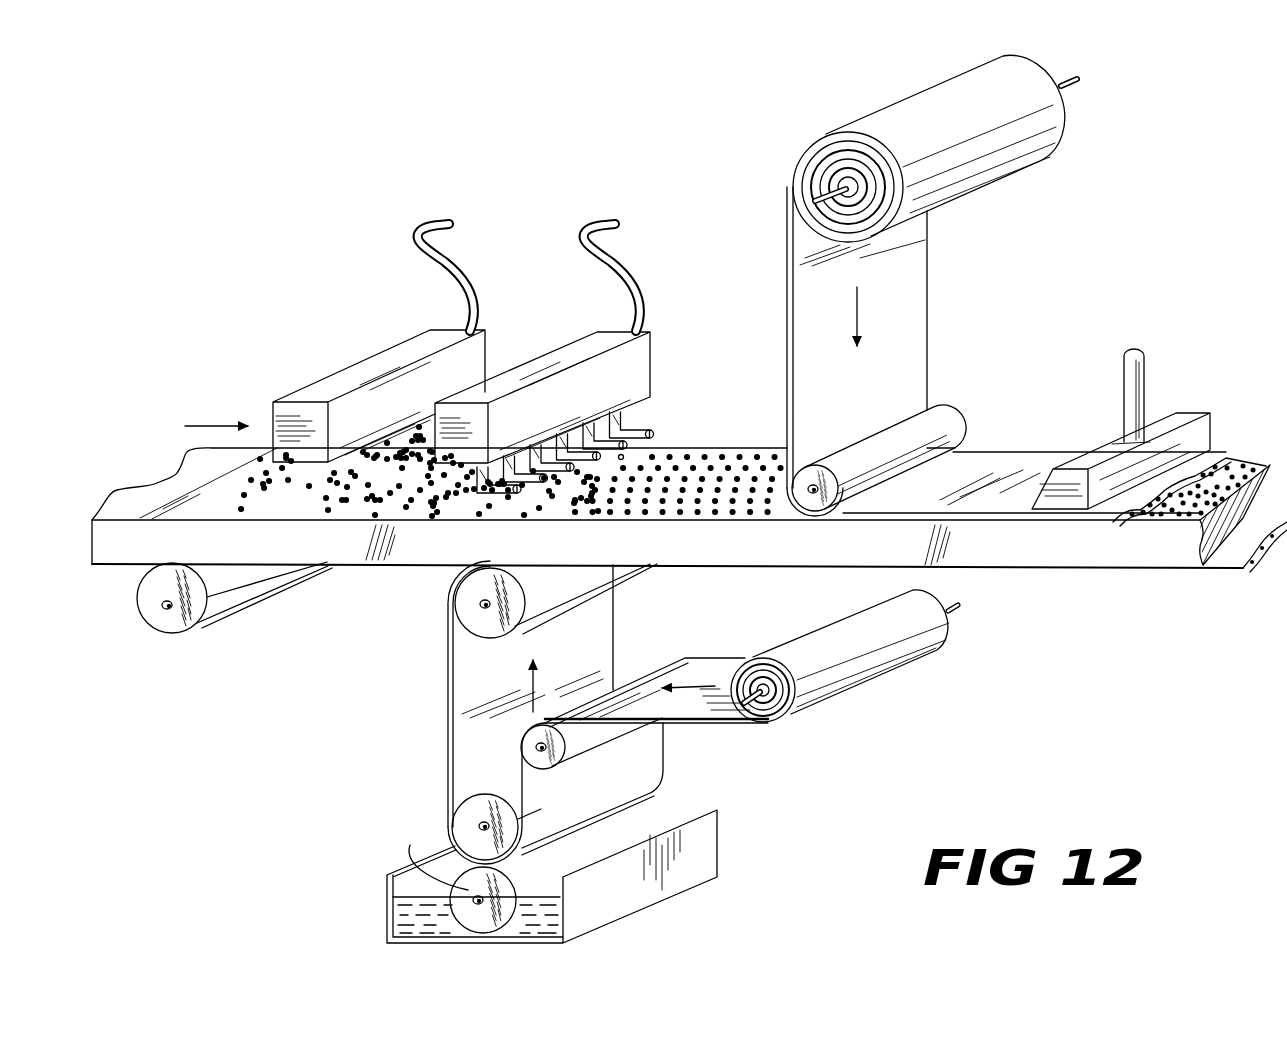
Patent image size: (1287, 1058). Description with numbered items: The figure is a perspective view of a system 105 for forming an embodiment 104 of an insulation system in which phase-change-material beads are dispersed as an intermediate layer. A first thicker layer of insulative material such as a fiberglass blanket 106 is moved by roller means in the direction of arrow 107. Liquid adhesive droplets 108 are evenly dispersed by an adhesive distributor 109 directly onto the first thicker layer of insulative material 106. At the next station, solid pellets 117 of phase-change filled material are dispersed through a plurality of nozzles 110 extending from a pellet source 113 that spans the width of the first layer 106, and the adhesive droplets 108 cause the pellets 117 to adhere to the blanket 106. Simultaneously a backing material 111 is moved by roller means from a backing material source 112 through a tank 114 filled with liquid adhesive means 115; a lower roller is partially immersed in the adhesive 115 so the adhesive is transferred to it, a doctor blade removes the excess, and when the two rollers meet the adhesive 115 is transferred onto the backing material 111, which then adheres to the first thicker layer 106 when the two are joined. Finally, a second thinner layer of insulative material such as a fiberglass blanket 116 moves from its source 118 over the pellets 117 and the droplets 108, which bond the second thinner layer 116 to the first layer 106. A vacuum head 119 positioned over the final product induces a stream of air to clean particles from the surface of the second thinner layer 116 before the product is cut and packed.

The insulation system embodiment 104 is at (992, 442).
The system 105 is at (487, 358).
The first thicker layer of insulative material 106 is at (329, 548).
The arrow 107 is at (205, 424).
The liquid adhesive droplets 108 is at (312, 507).
The adhesive distributor 109 is at (368, 442).
The nozzles 110 is at (648, 420).
The backing material 111 is at (487, 759).
The backing material source 112 is at (902, 682).
The pellet source 113 is at (568, 358).
The tank 114 is at (595, 908).
The liquid adhesive means 115 is at (414, 925).
The second thinner layer of insulative material 116 is at (855, 443).
The solid pellets of phase-change filled material 117 is at (621, 457).
The source of second thinner layer 118 is at (855, 100).
The vacuum head 119 is at (1172, 394).